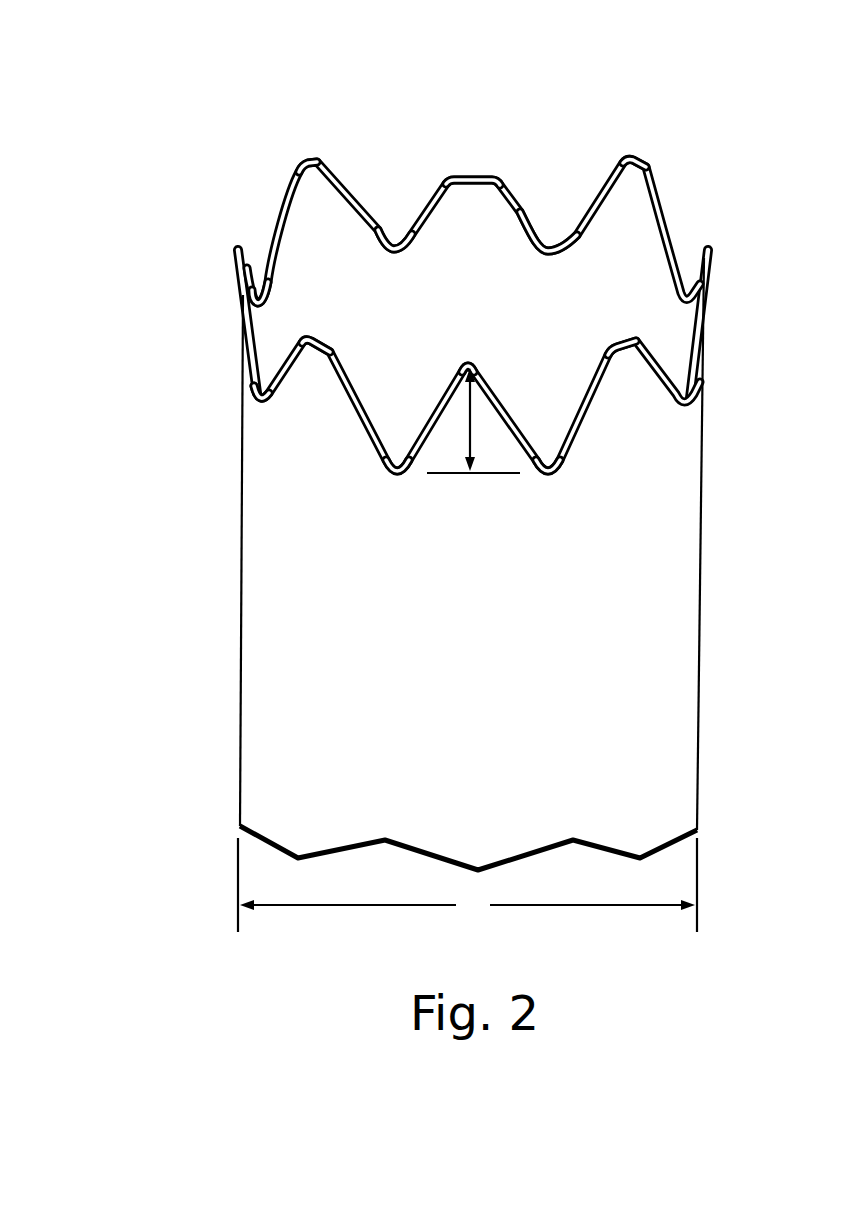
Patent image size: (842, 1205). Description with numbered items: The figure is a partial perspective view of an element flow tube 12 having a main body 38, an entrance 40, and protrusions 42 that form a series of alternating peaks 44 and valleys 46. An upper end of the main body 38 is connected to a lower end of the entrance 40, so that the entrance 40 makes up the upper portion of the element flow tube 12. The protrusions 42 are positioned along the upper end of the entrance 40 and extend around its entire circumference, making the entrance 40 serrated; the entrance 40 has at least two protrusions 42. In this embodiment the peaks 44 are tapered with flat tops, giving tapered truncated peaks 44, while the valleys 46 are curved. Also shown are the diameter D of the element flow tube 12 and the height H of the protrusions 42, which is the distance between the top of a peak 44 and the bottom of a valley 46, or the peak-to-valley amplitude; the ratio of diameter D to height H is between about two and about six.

The element flow tube 12 is at (143, 88).
The main body 38 is at (353, 740).
The entrance 40 is at (263, 450).
The protrusions 42 is at (205, 306).
The peaks 44 is at (310, 184).
The valleys 46 is at (390, 254).